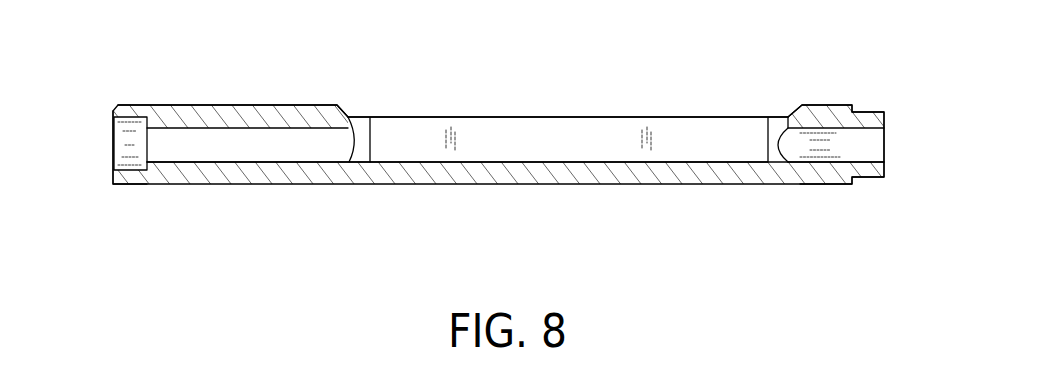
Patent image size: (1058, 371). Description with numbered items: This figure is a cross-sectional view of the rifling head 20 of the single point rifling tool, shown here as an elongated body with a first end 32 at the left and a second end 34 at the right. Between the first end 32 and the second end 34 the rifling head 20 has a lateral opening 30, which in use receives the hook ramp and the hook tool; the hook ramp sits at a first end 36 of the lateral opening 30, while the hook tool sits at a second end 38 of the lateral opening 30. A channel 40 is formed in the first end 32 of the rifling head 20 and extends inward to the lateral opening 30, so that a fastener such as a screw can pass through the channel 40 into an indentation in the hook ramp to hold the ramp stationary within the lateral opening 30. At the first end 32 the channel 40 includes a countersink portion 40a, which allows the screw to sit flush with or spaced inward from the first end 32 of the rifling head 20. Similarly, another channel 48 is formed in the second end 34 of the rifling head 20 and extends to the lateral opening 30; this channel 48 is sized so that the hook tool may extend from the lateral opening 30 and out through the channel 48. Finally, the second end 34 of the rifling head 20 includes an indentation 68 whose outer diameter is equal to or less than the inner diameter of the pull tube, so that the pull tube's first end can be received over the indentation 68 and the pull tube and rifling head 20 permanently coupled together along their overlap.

The rifling head 20 is at (403, 168).
The lateral opening 30 is at (552, 143).
The first end of the rifling head 32 is at (112, 178).
The second end of the rifling head 34 is at (885, 168).
The first end of the lateral opening 36 is at (352, 115).
The second end of the lateral opening 38 is at (790, 117).
The channel 40 is at (218, 148).
The countersink portion 40a is at (118, 143).
The channel 48 is at (866, 145).
The indentation 68 is at (863, 110).